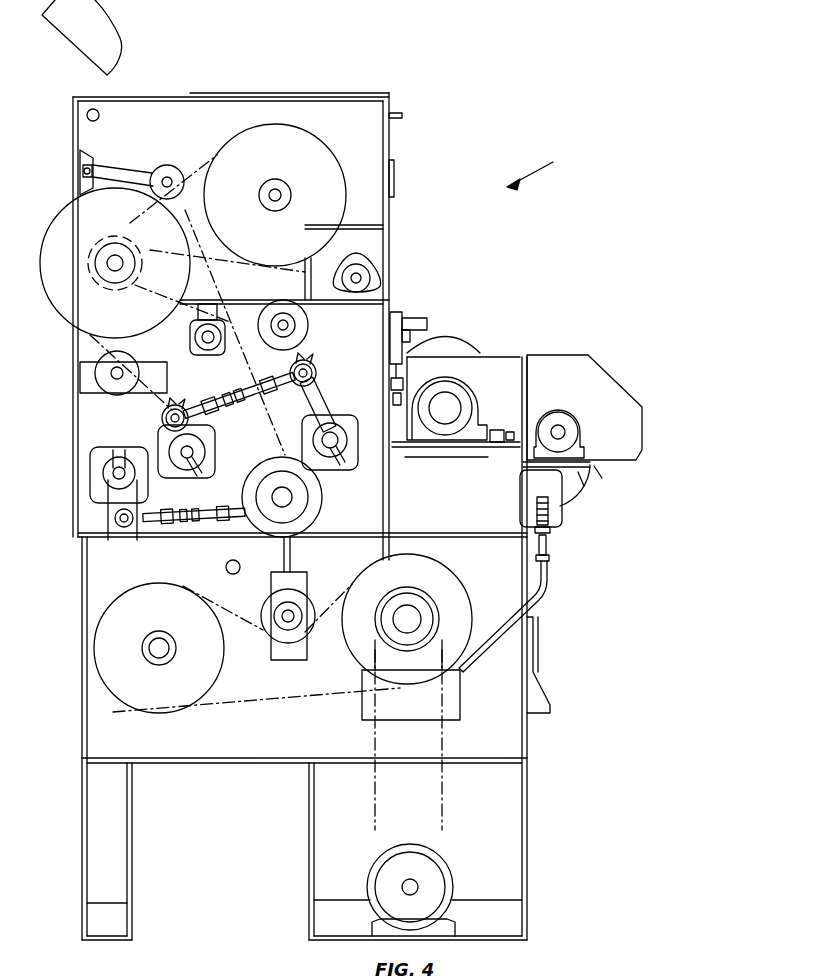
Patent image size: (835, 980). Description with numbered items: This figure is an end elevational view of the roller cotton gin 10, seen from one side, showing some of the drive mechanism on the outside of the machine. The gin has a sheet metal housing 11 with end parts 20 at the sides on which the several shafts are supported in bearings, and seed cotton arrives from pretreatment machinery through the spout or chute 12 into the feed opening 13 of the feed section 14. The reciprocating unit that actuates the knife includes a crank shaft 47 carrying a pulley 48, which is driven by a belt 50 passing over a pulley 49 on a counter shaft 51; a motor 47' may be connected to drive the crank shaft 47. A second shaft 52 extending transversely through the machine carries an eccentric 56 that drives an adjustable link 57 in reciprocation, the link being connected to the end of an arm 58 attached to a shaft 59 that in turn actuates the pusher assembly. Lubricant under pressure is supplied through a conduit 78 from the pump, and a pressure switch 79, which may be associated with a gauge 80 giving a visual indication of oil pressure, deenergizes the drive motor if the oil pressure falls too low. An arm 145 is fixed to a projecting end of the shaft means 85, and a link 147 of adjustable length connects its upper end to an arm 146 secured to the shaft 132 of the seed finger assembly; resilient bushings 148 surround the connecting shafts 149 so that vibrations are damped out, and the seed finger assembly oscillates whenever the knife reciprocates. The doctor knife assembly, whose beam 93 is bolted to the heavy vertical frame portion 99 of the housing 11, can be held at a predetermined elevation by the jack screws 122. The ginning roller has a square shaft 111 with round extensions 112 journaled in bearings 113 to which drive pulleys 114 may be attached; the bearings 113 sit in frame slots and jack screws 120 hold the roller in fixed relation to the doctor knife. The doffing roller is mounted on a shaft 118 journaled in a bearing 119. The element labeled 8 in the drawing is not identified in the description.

The roller cotton gin 10 is at (546, 163).
The sheet metal housing 11 is at (80, 421).
The spout or chute 12 is at (120, 38).
The feed opening 13 is at (127, 97).
The feed section 14 is at (391, 146).
The end parts 20 is at (246, 751).
The roller and link 8 is at (292, 348).
The crank shaft 47 is at (436, 605).
The motor 47' is at (426, 890).
The pulley 48 is at (466, 607).
The pulley 49 is at (165, 583).
The belt 50 is at (338, 690).
The counter shaft 51 is at (155, 634).
The second shaft 52 is at (281, 485).
The eccentric 56 is at (325, 503).
The adjustable link 57 is at (190, 505).
The arm 58 is at (112, 518).
The shaft 59 is at (112, 477).
The conduit 78 is at (541, 584).
The pressure switch 79 is at (562, 511).
The gauge 80 is at (548, 516).
The shaft means 85 is at (178, 452).
The beam 93 is at (404, 353).
The vertical frame portion 99 is at (400, 312).
The square shaft 111 is at (466, 403).
The round extensions 112 is at (459, 411).
The bearings 113 is at (438, 388).
The drive pulleys 114 is at (462, 344).
The shaft 118 is at (572, 434).
The bearing 119 is at (570, 414).
The jack screws 120 is at (498, 445).
The jack screws 122 is at (404, 384).
The shaft 132 is at (338, 418).
The arm 145 is at (171, 426).
The arm 146 is at (326, 373).
The link 147 is at (248, 402).
The resilient bushings 148 is at (172, 409).
The connecting shafts 149 is at (178, 412).